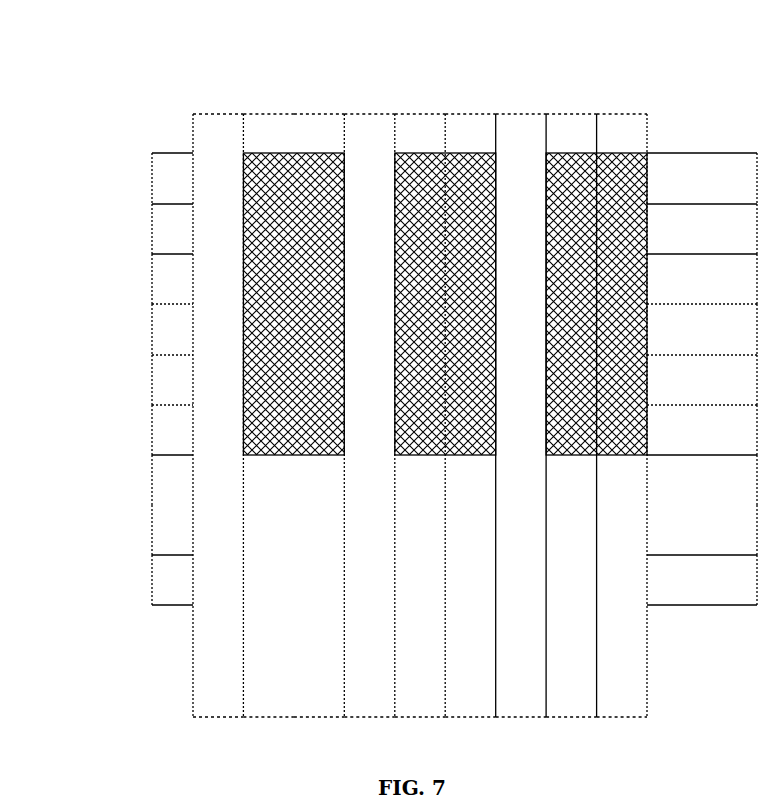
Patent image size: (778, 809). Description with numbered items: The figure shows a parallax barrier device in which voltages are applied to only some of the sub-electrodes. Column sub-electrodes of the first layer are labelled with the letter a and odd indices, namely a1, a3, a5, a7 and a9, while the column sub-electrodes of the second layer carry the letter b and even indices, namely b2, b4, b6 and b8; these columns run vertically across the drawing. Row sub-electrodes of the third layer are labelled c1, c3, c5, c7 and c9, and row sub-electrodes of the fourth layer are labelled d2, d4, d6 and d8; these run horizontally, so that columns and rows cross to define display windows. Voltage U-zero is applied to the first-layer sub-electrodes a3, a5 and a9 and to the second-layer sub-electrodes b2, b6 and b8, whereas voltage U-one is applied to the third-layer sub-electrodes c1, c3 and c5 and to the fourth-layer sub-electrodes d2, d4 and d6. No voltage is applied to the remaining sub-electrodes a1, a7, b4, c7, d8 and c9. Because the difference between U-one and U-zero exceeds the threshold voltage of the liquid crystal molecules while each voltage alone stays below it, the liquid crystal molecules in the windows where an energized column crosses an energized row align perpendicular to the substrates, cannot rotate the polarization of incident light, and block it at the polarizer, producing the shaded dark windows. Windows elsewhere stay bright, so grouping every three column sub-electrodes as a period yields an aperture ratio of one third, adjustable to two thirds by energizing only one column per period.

The sub-electrode of the first layer a1 is at (218, 114).
The sub-electrode of the second layer b2 is at (268, 114).
The sub-electrode of the first layer a3 is at (318, 114).
The sub-electrode of the second layer b4 is at (369, 114).
The sub-electrode of the first layer a5 is at (420, 114).
The sub-electrode of the second layer b6 is at (469, 114).
The sub-electrode of the first layer a7 is at (520, 114).
The sub-electrode of the second layer b8 is at (571, 114).
The sub-electrode of the first layer a9 is at (621, 114).
The sub-electrode of the third layer c1 is at (152, 180).
The sub-electrode of the fourth layer d2 is at (152, 230).
The sub-electrode of the third layer c3 is at (152, 280).
The sub-electrode of the fourth layer d4 is at (152, 330).
The sub-electrode of the third layer c5 is at (152, 380).
The sub-electrode of the fourth layer d6 is at (152, 430).
The sub-electrode of the third layer c7 is at (152, 480).
The sub-electrode of the fourth layer d8 is at (152, 530).
The sub-electrode of the third layer c9 is at (152, 580).